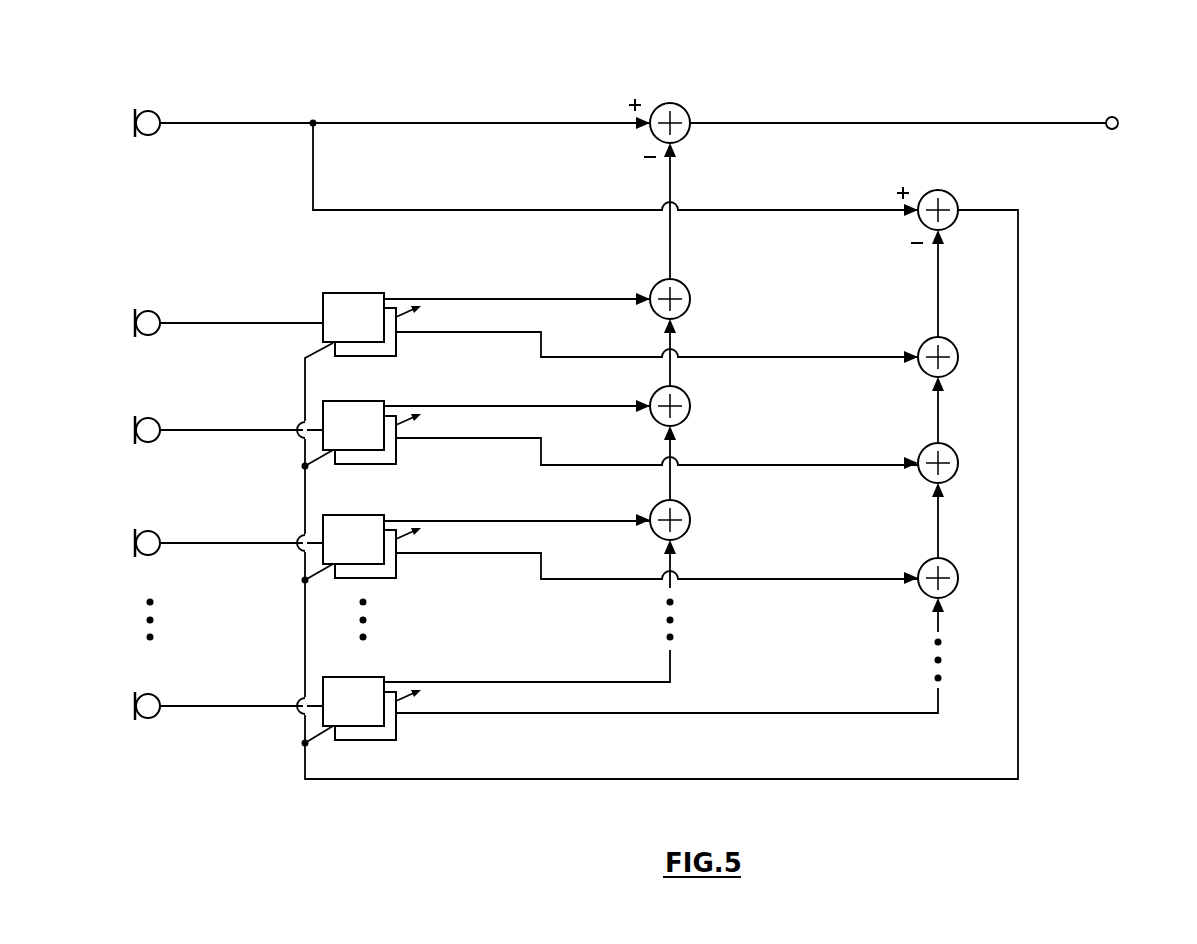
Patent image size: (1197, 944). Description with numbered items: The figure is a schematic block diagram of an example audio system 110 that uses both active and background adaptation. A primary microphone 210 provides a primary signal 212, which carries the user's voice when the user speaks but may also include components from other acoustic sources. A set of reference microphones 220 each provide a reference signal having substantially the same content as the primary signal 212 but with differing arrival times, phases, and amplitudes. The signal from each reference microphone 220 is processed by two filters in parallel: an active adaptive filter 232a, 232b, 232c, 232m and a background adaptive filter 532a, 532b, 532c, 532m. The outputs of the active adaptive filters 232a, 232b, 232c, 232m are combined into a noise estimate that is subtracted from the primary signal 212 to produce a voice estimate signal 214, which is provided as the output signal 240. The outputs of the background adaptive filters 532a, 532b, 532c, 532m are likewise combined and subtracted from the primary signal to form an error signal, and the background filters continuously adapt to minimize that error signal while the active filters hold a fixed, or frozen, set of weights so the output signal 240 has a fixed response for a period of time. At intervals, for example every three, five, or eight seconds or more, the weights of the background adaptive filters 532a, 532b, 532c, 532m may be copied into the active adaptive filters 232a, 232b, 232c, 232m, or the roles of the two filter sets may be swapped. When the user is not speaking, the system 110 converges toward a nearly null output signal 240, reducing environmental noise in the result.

The audio system 110 is at (1149, 62).
The primary microphone 210 is at (134, 119).
The primary signal 212 is at (250, 122).
The voice estimate signal 214 is at (787, 124).
The output signal 240 is at (1115, 130).
The reference microphones 220 is at (122, 320).
The active adaptive filter 232a is at (371, 293).
The active adaptive filter 232b is at (357, 401).
The active adaptive filter 232c is at (357, 515).
The active adaptive filter 232m is at (370, 677).
The background adaptive filter 532a is at (398, 350).
The background adaptive filter 532b is at (398, 456).
The background adaptive filter 532c is at (398, 570).
The background adaptive filter 532m is at (398, 733).